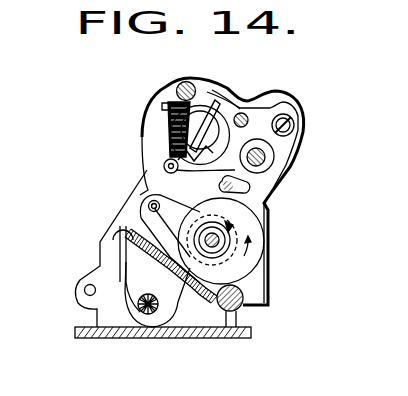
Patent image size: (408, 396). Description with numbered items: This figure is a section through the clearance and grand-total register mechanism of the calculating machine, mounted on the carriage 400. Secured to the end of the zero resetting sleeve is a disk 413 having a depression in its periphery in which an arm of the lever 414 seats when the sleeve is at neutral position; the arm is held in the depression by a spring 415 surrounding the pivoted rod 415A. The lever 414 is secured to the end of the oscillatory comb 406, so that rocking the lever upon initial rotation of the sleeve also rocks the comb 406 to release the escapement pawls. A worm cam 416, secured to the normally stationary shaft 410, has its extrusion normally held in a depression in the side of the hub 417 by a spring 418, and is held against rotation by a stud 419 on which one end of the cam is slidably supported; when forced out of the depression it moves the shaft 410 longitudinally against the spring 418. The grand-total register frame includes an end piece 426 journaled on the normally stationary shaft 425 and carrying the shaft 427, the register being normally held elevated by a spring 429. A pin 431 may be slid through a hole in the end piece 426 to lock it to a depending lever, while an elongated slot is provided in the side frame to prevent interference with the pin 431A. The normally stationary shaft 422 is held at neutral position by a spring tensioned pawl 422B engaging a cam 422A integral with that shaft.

The carriage 400 is at (75, 326).
The oscillatory comb 406 is at (150, 312).
The normally stationary shaft 410 is at (245, 280).
The disk 413 is at (255, 268).
The lever 414 is at (224, 306).
The spring 415 is at (193, 251).
The pivoted rod 415A is at (113, 238).
The worm cam 416 is at (234, 219).
The hub 417 is at (236, 231).
The spring 418 is at (214, 242).
The stud 419 is at (149, 204).
The normally stationary shaft 422 is at (207, 158).
The cam 422A is at (165, 130).
The spring tensioned pawl 422B is at (162, 168).
The normally stationary shaft 425 is at (273, 160).
The end piece 426 is at (262, 103).
The shaft 427 is at (296, 125).
The spring 429 is at (168, 117).
The pin 431 is at (243, 113).
The pin 431A is at (250, 187).